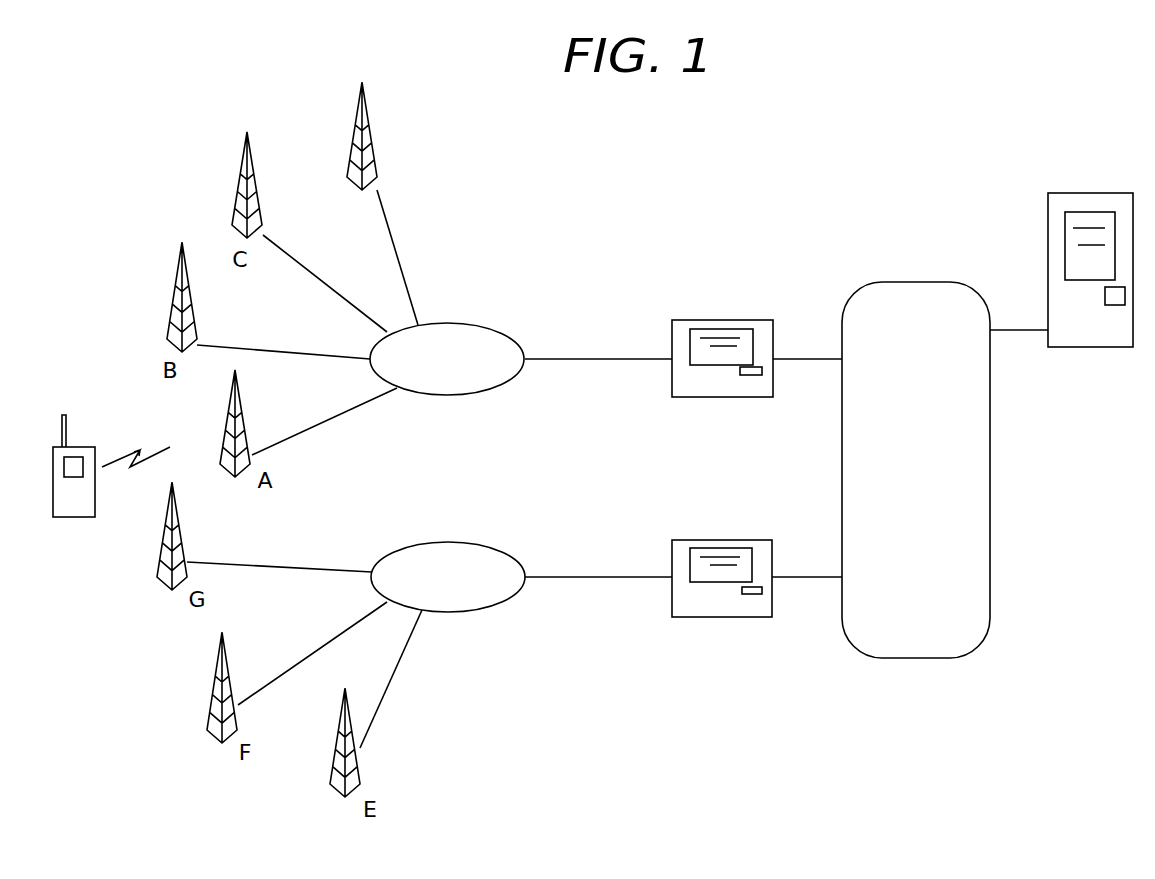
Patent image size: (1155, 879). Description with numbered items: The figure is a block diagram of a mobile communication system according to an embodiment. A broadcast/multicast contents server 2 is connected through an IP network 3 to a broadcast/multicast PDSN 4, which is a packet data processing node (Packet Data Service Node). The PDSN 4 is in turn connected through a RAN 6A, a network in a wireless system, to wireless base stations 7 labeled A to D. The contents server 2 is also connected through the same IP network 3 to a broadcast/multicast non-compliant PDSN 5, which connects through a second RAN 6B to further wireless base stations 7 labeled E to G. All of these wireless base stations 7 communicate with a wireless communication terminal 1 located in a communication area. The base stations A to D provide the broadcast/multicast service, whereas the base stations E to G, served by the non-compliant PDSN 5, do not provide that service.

The wireless communication terminal 1 is at (72, 520).
The broadcast/multicast contents server 2 is at (1100, 192).
The IP network 3 is at (930, 282).
The broadcast/multicast PDSN 4 is at (735, 320).
The broadcast/multicast non-compliant PDSN 5 is at (672, 547).
The RAN 6A is at (497, 327).
The RAN 6B is at (482, 614).
The wireless base stations 7 is at (366, 110).